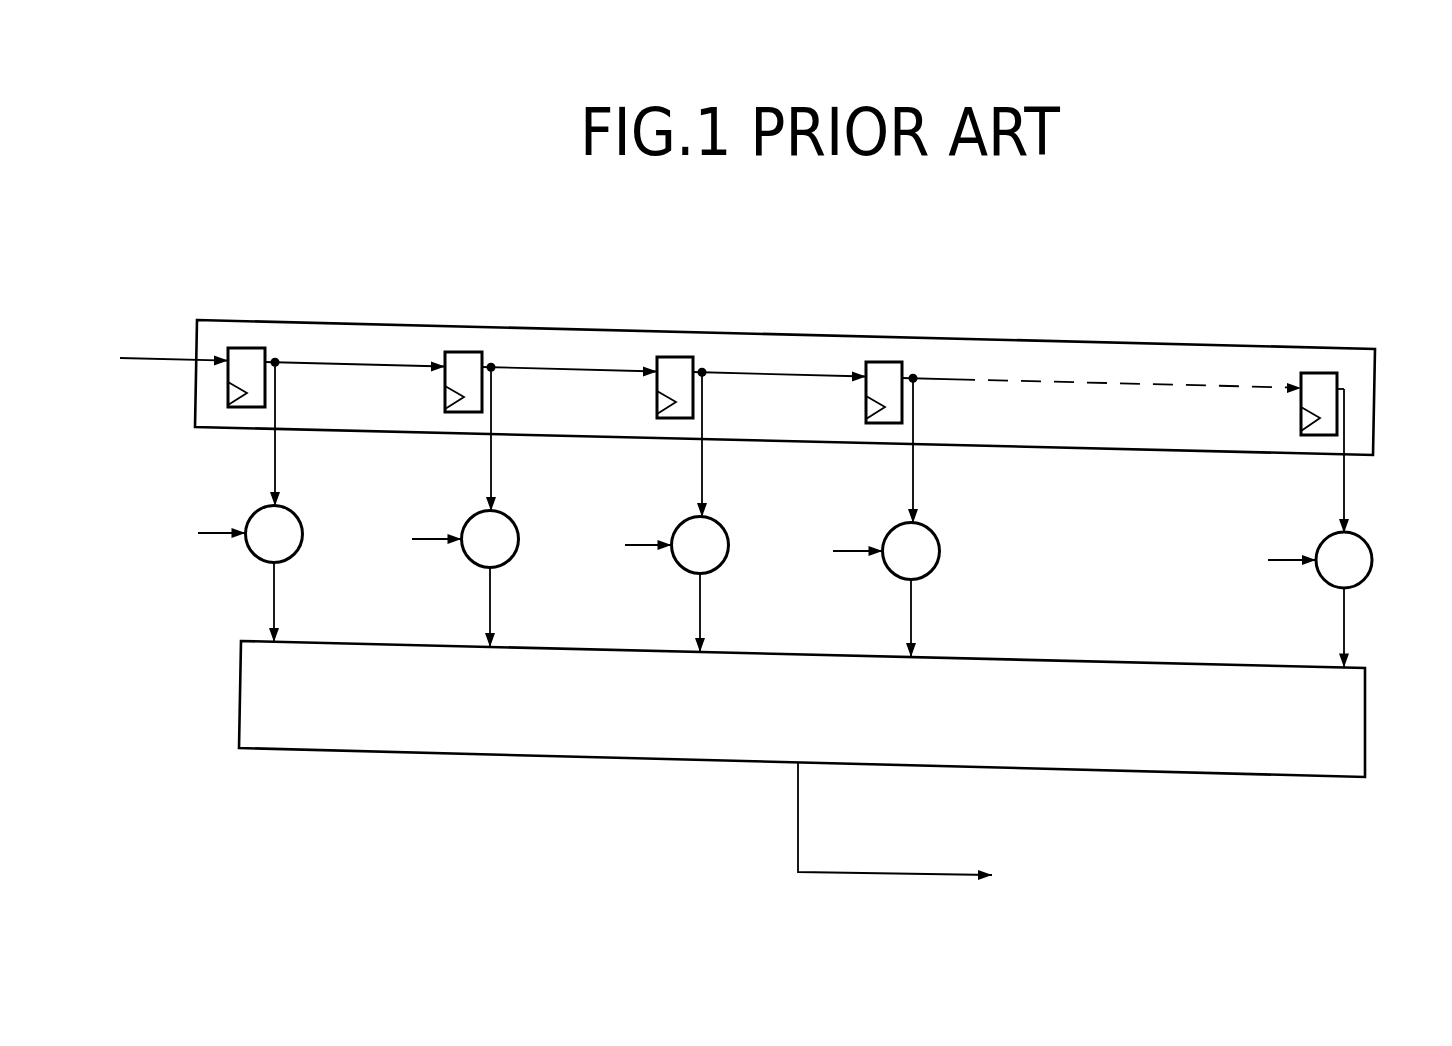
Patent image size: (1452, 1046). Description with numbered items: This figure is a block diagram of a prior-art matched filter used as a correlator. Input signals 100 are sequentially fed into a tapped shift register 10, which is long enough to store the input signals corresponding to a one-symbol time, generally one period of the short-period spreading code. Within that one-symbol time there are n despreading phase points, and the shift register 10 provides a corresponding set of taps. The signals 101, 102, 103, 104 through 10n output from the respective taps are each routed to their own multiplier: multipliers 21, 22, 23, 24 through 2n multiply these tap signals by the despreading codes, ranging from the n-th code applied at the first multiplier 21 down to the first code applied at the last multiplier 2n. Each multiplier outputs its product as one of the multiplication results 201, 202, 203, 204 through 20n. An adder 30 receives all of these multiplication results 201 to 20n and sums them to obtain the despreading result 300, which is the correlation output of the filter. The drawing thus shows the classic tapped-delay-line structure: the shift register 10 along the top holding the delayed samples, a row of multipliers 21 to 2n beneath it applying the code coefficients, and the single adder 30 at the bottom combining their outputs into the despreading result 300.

The tapped shift register 10 is at (380, 322).
The input signals 100 is at (150, 357).
The tap output signal 101 is at (275, 361).
The tap output signal 102 is at (491, 366).
The tap output signal 103 is at (702, 371).
The tap output signal 104 is at (913, 377).
The tap output signal 10n is at (1346, 389).
The multiplier 21 is at (300, 528).
The multiplier 22 is at (517, 533).
The multiplier 23 is at (727, 539).
The multiplier 24 is at (937, 545).
The multiplier 2n is at (1370, 554).
The multiplication result 201 is at (272, 603).
The multiplication result 202 is at (488, 609).
The multiplication result 203 is at (698, 614).
The multiplication result 204 is at (909, 619).
The multiplication result 20n is at (1342, 630).
The adder 30 is at (1047, 660).
The despreading result 300 is at (905, 871).